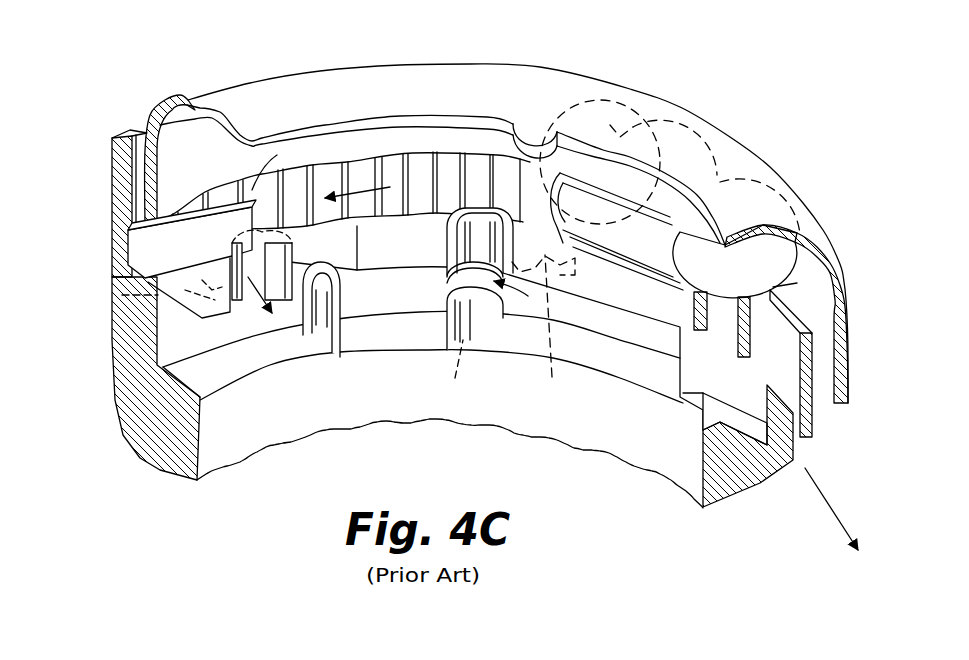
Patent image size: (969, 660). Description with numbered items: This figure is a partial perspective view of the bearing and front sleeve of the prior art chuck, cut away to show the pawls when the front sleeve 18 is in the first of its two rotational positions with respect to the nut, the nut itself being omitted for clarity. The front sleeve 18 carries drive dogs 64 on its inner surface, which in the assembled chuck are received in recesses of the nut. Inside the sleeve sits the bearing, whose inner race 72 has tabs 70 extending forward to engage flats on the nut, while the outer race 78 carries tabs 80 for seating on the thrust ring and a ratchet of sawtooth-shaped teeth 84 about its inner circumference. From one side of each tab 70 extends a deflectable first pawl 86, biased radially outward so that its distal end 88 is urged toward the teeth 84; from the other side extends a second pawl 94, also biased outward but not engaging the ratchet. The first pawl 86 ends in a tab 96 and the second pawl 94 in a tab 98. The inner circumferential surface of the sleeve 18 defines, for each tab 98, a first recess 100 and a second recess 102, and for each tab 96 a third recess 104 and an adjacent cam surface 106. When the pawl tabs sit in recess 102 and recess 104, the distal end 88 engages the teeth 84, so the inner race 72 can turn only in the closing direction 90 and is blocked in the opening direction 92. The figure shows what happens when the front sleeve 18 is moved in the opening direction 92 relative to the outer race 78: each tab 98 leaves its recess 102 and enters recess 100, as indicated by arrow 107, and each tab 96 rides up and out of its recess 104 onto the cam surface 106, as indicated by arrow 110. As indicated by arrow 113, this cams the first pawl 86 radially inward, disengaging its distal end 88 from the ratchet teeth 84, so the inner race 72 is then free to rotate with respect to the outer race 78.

The front sleeve 18 is at (118, 381).
The drive dog 64 is at (315, 327).
The tab 70 is at (700, 405).
The inner race 72 is at (627, 193).
The outer race 78 is at (575, 78).
The tab 80 is at (490, 143).
The sawtooth-shaped tooth 84 is at (407, 157).
The first pawl 86 is at (112, 205).
The distal end 88 is at (287, 218).
The closing direction 90 is at (358, 185).
The opening direction 92 is at (832, 498).
The second pawl 94 is at (623, 310).
The tab 96 is at (332, 285).
The tab 98 is at (447, 255).
The first recess 100 is at (457, 371).
The second recess 102 is at (543, 328).
The third recess 104 is at (330, 237).
The cam surface 106 is at (122, 294).
The arrow 107 is at (513, 297).
The arrow 110 is at (252, 303).
The arrow 113 is at (250, 185).